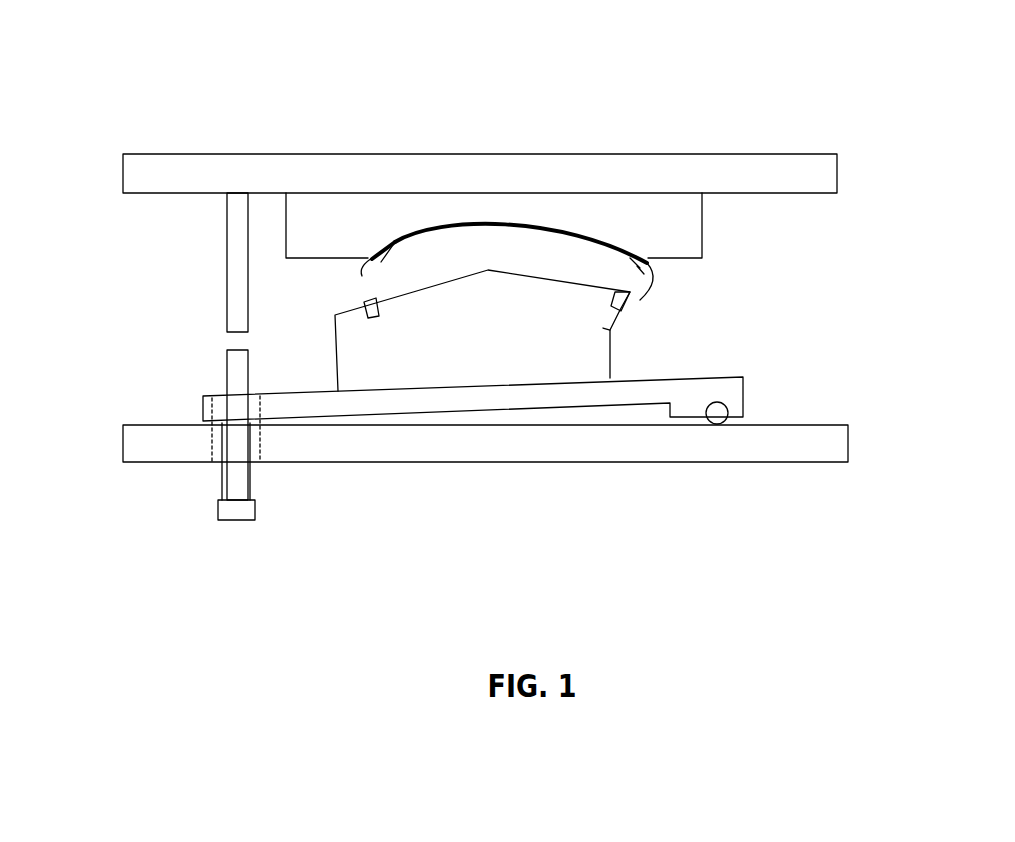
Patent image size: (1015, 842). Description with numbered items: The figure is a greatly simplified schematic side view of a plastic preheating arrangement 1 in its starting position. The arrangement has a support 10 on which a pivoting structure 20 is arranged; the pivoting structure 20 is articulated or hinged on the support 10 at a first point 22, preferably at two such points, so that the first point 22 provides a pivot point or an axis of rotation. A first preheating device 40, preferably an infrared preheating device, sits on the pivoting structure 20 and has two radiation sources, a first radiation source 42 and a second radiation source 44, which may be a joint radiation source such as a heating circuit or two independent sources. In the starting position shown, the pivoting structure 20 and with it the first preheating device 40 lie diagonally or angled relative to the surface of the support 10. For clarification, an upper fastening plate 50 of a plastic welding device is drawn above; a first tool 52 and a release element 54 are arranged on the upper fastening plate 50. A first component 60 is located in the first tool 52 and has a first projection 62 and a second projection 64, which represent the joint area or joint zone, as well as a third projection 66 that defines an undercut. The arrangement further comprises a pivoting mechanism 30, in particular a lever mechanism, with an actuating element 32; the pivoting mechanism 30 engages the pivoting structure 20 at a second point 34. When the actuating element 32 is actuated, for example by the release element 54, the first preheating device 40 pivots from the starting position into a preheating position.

The plastic preheating arrangement 1 is at (810, 393).
The support 10 is at (790, 450).
The pivoting structure 20 is at (690, 383).
The first point 22 is at (727, 423).
The pivoting mechanism 30 is at (223, 510).
The actuating element 32 is at (233, 362).
The second point 34 is at (240, 422).
The first preheating device 40 is at (605, 331).
The first radiation source 42 is at (378, 308).
The second radiation source 44 is at (613, 303).
The upper fastening plate 50 is at (777, 170).
The first tool 52 is at (663, 222).
The release element 54 is at (235, 265).
The first component 60 is at (457, 236).
The first projection 62 is at (393, 243).
The second projection 64 is at (630, 258).
The third projection 66 is at (645, 298).